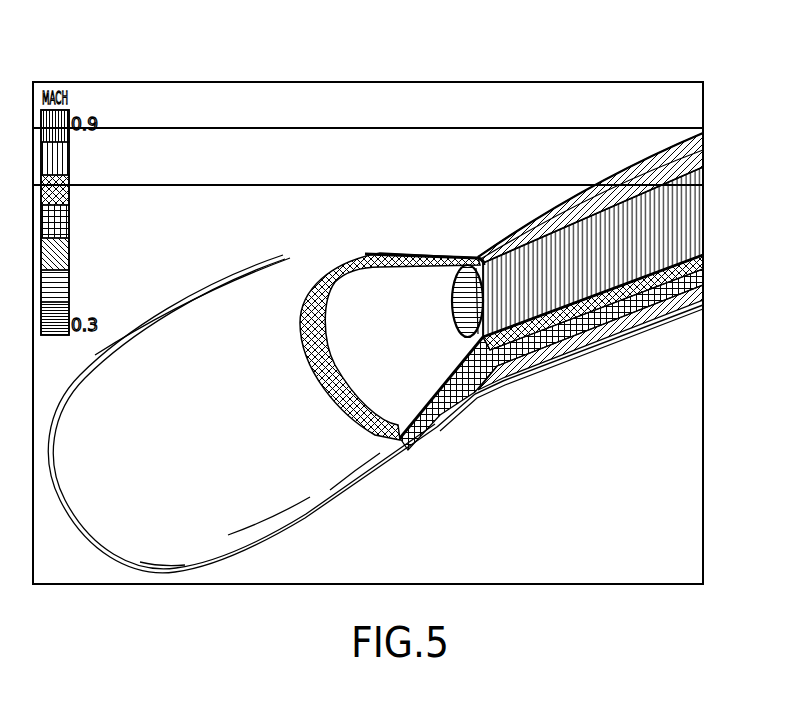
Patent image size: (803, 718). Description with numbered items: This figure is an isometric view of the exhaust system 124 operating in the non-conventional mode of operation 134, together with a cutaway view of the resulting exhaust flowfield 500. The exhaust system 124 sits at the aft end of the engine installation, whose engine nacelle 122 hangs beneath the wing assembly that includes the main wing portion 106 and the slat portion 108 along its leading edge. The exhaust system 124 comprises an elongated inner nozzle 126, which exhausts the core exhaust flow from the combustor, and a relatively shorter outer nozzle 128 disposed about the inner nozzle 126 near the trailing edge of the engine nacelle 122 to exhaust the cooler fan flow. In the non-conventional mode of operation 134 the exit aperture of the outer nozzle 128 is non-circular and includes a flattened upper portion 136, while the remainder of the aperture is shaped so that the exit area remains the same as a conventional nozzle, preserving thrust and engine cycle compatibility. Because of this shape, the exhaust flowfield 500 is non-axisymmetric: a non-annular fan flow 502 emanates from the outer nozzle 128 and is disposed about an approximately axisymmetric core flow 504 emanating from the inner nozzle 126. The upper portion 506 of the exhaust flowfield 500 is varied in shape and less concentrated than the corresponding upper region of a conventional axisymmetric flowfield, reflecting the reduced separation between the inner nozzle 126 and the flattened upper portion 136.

The exhaust flowfield 500 is at (466, 62).
The main wing portion 106 is at (253, 92).
The slat portion 108 is at (216, 167).
The engine nacelle 122 is at (110, 555).
The exhaust system 124 is at (510, 537).
The inner nozzle 126 is at (477, 393).
The outer nozzle 128 is at (408, 462).
The non-conventional mode of operation 134 is at (500, 462).
The flattened upper portion 136 is at (283, 258).
The non-annular fan flow 502 is at (518, 349).
The core flow 504 is at (562, 273).
The upper portion of the exhaust flowfield 506 is at (430, 222).